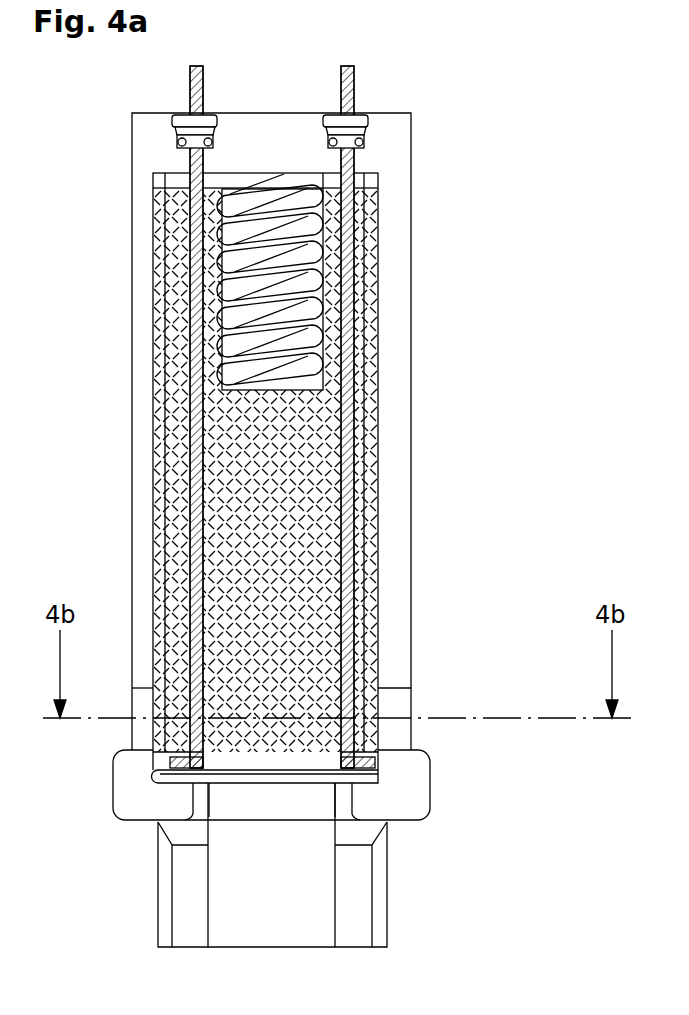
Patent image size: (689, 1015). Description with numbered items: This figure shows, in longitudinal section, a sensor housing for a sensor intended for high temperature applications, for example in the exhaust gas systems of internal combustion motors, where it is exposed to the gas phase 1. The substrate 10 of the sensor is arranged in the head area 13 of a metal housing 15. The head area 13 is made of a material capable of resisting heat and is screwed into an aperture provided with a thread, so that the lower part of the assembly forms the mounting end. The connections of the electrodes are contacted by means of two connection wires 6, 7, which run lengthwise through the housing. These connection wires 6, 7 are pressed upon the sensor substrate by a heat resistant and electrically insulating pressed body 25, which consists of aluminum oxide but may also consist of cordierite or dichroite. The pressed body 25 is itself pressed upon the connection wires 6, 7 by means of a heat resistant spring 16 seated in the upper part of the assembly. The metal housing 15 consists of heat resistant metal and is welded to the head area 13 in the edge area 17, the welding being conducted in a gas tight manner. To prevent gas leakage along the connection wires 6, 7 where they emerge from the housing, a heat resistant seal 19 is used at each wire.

The gas phase 1 is at (263, 922).
The connection wire 6 is at (348, 553).
The connection wire 7 is at (197, 533).
The substrate 10 is at (307, 772).
The head area 13 is at (415, 808).
The metal housing 15 is at (395, 590).
The heat resistant spring 16 is at (272, 302).
The edge area 17 is at (412, 688).
The heat resistant seal 19 is at (207, 137).
The pressed body 25 is at (272, 472).